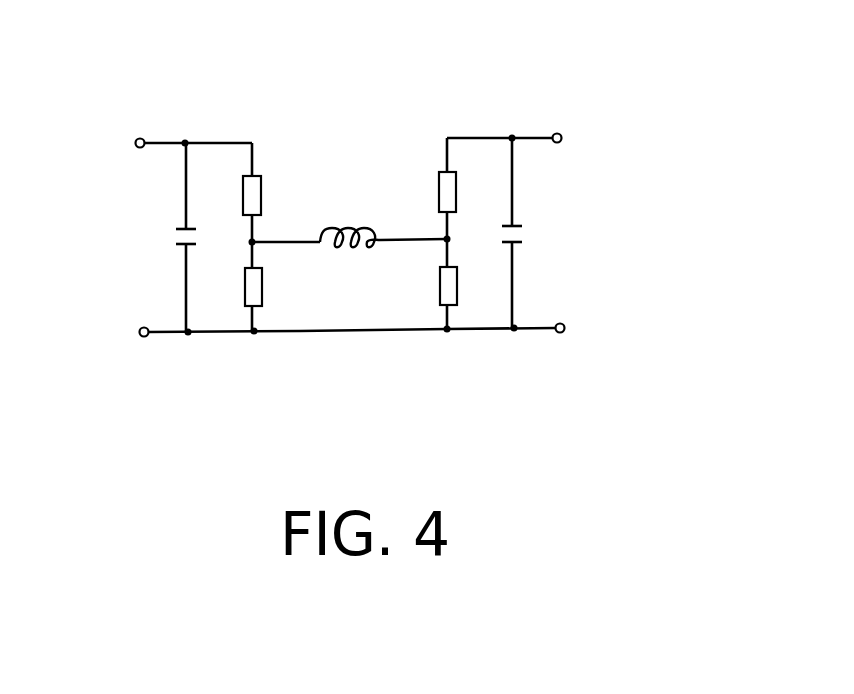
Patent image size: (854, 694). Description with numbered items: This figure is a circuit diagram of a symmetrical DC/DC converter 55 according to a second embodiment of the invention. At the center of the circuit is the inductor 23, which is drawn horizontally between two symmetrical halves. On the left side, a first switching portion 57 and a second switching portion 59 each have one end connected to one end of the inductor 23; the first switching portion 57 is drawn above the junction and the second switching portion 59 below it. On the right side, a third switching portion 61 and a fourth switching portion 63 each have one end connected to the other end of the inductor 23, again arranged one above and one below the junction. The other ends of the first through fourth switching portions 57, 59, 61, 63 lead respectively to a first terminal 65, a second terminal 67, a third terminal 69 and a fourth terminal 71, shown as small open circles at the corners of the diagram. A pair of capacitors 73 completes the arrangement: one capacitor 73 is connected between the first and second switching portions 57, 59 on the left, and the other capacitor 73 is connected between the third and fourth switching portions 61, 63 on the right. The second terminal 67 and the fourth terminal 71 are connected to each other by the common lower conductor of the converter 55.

The symmetrical DC/DC converter 55 is at (339, 102).
The inductor 23 is at (345, 253).
The first switching portion 57 is at (261, 177).
The second switching portion 59 is at (262, 306).
The third switching portion 61 is at (440, 174).
The fourth switching portion 63 is at (441, 305).
The first terminal 65 is at (140, 138).
The second terminal 67 is at (146, 337).
The third terminal 69 is at (557, 134).
The fourth terminal 71 is at (558, 333).
The capacitor 73 is at (158, 240).